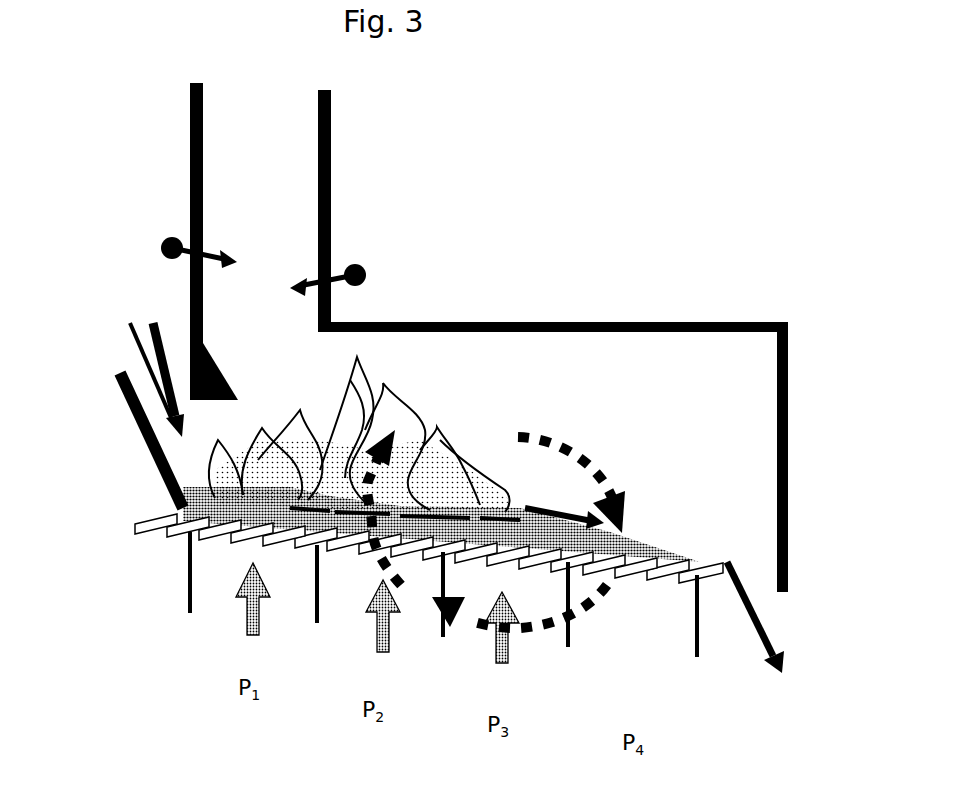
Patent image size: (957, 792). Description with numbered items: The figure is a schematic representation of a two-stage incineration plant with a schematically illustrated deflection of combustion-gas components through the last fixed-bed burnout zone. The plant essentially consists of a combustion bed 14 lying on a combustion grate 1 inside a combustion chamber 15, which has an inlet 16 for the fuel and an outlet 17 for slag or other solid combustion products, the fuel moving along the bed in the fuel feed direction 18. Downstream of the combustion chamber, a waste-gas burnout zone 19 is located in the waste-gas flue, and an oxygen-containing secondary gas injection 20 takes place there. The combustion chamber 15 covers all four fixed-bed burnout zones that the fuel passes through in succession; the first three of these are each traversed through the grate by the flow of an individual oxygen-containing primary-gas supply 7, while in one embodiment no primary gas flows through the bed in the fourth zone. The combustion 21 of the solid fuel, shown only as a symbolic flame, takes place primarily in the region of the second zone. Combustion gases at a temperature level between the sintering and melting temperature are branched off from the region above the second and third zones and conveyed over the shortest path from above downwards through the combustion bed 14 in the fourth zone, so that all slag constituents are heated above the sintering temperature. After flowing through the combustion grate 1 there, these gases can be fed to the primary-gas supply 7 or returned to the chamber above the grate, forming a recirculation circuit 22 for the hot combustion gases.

The combustion grate 1 is at (409, 610).
The primary-gas supply 7 is at (260, 613).
The combustion bed 14 is at (183, 510).
The combustion chamber 15 is at (503, 358).
The inlet 16 is at (145, 392).
The outlet 17 is at (765, 630).
The fuel feed direction 18 is at (527, 512).
The waste-gas burnout zone 19 is at (279, 207).
The secondary gas injection 20 is at (160, 246).
The combustion 21 is at (377, 387).
The recirculation circuit 22 is at (570, 443).